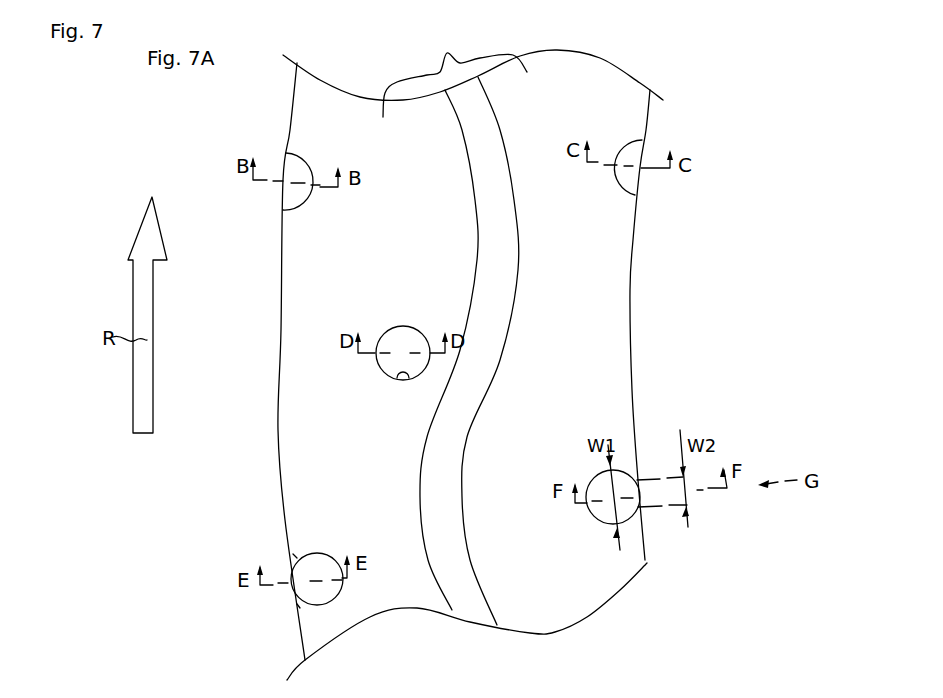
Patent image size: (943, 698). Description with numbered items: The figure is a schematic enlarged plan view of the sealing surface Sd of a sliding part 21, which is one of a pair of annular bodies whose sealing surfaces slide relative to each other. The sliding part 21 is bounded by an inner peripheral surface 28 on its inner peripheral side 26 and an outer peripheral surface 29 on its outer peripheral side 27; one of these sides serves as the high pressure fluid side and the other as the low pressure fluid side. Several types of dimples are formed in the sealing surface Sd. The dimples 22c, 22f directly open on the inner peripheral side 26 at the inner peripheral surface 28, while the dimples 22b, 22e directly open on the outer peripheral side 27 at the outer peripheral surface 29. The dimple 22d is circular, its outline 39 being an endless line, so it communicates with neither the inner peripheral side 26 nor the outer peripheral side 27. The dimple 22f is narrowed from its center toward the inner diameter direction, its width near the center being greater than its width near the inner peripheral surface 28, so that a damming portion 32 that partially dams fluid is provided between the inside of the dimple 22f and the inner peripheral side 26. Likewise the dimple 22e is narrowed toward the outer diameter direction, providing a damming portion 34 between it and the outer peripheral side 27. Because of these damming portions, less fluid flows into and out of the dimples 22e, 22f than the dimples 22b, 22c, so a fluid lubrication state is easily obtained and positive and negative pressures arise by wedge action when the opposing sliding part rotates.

The sliding part 21 is at (606, 44).
The dimple 22b is at (294, 153).
The dimple 22c is at (635, 153).
The dimple 22d is at (405, 338).
The dimple 22e is at (337, 560).
The dimple 22f is at (598, 483).
The inner peripheral side 26 is at (744, 281).
The outer peripheral side 27 is at (212, 366).
The inner peripheral surface 28 is at (631, 263).
The outer peripheral surface 29 is at (282, 260).
The damming portion 32 is at (633, 472).
The damming portion 34 is at (291, 553).
The outline 39 is at (403, 378).
The sealing surface Sd is at (455, 70).